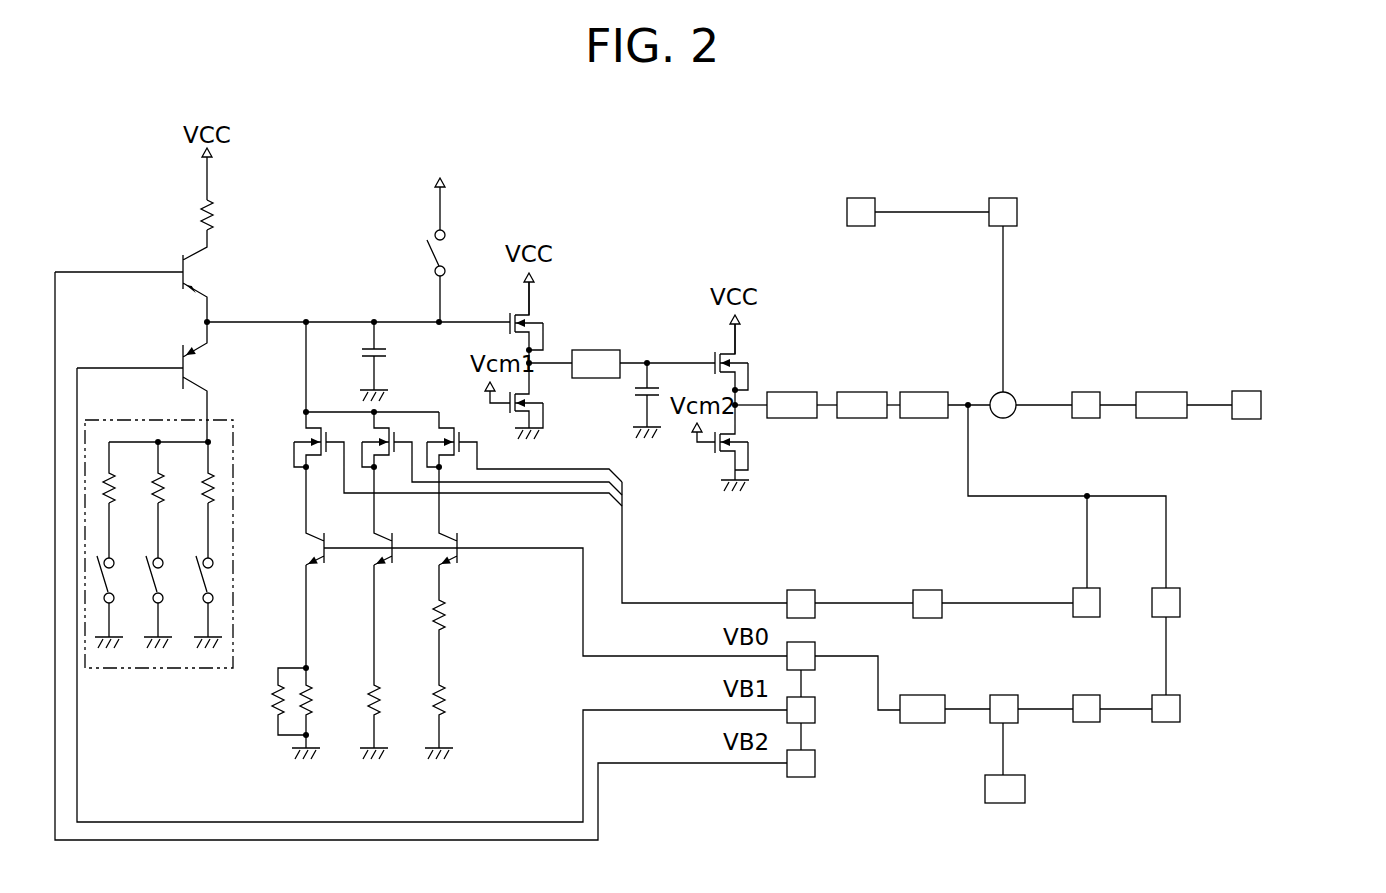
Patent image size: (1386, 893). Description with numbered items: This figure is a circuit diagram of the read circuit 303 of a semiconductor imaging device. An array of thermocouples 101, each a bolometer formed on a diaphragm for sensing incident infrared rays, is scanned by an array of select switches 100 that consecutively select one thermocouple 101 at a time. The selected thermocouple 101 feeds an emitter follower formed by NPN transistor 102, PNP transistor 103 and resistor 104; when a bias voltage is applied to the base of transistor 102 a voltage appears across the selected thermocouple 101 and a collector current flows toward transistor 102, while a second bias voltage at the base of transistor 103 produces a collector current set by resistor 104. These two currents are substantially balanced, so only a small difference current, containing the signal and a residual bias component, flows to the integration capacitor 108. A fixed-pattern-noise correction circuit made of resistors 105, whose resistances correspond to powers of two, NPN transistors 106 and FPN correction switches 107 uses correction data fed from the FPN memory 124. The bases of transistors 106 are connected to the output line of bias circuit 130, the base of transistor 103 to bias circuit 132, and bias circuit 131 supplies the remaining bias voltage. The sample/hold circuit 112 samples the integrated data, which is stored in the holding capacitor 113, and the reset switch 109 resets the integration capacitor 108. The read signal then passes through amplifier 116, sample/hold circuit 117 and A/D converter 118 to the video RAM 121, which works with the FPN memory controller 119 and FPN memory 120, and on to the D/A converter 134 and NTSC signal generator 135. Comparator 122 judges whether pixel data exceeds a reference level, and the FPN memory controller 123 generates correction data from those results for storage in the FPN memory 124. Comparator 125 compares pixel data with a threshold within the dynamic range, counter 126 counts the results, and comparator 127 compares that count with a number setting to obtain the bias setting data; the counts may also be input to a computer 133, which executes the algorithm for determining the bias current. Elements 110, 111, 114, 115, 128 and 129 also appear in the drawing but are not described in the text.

The select switches 100 is at (213, 577).
The thermocouples 101 is at (213, 478).
The NPN transistor 102 is at (199, 364).
The PNP transistor 103 is at (203, 268).
The resistor 104 is at (218, 215).
The resistors 105 is at (452, 663).
The NPN transistors 106 is at (460, 547).
The FPN correction switches 107 is at (403, 410).
The integration capacitor 108 is at (386, 355).
The reset switch 109 is at (448, 254).
The MOS transistor 110 is at (546, 416).
The MOS transistor 111 is at (545, 318).
The sample/hold circuit 112 is at (598, 349).
The holding capacitor 113 is at (637, 393).
The MOS transistor 114 is at (750, 436).
The MOS transistor 115 is at (748, 351).
The amplifier 116 is at (795, 391).
The sample/hold circuit 117 is at (865, 391).
The A/D converter 118 is at (925, 391).
The FPN memory controller 119 is at (846, 212).
The FPN memory 120 is at (1010, 228).
The video RAM 121 is at (1085, 391).
The comparator 122 is at (1074, 586).
The FPN memory controller 123 is at (928, 619).
The FPN memory 124 is at (787, 592).
The comparator 125 is at (1180, 606).
The counter 126 is at (1180, 712).
The comparator 127 is at (1087, 723).
The bias controller 128 is at (1015, 724).
The parallel to serial converter 129 is at (925, 724).
The VB0 bias circuit 130 is at (816, 646).
The VB1 bias circuit 131 is at (818, 712).
The VB2 bias circuit 132 is at (818, 767).
The computer 133 is at (1003, 804).
The D/A converter 134 is at (1165, 391).
The NTSC signal generator 135 is at (1242, 391).
The read circuit 303 is at (665, 160).